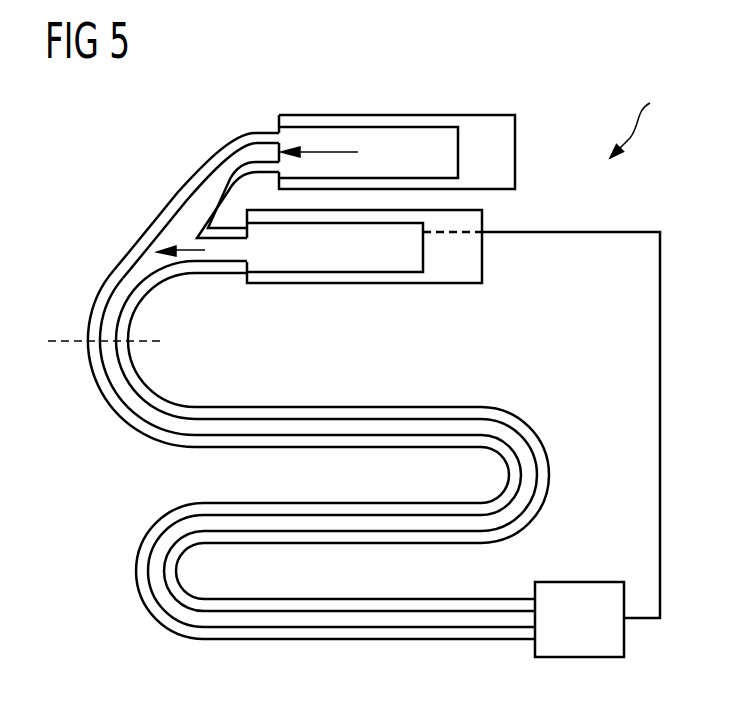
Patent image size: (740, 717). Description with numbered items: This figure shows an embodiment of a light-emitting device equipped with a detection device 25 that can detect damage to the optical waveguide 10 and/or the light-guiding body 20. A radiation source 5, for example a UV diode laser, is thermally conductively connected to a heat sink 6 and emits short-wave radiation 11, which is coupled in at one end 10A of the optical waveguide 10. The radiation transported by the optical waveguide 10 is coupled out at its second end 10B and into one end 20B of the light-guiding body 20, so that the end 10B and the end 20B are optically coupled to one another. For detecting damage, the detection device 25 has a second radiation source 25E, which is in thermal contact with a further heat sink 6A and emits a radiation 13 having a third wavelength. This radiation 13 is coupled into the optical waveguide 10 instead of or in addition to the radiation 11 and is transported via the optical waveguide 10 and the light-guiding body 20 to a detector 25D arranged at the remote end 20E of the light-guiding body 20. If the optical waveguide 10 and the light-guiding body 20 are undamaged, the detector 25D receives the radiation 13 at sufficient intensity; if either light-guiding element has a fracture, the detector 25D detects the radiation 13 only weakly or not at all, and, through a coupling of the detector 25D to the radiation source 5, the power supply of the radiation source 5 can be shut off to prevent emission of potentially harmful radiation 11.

The radiation source 5 is at (353, 263).
The heat sink 6 is at (472, 262).
The further heat sink 6A is at (515, 153).
The optical waveguide 10 is at (193, 178).
The end of the optical waveguide 10A is at (246, 247).
The second end of the optical waveguide 10B is at (130, 333).
The short-wave radiation 11 is at (213, 250).
The radiation having a third wavelength 13 is at (322, 150).
The light-guiding body 20 is at (286, 408).
The end of the light-guiding body 20B is at (88, 345).
The remote end of the light-guiding body 20E is at (534, 643).
The detection device 25 is at (646, 122).
The detector 25D is at (583, 590).
The second radiation source 25E is at (406, 138).